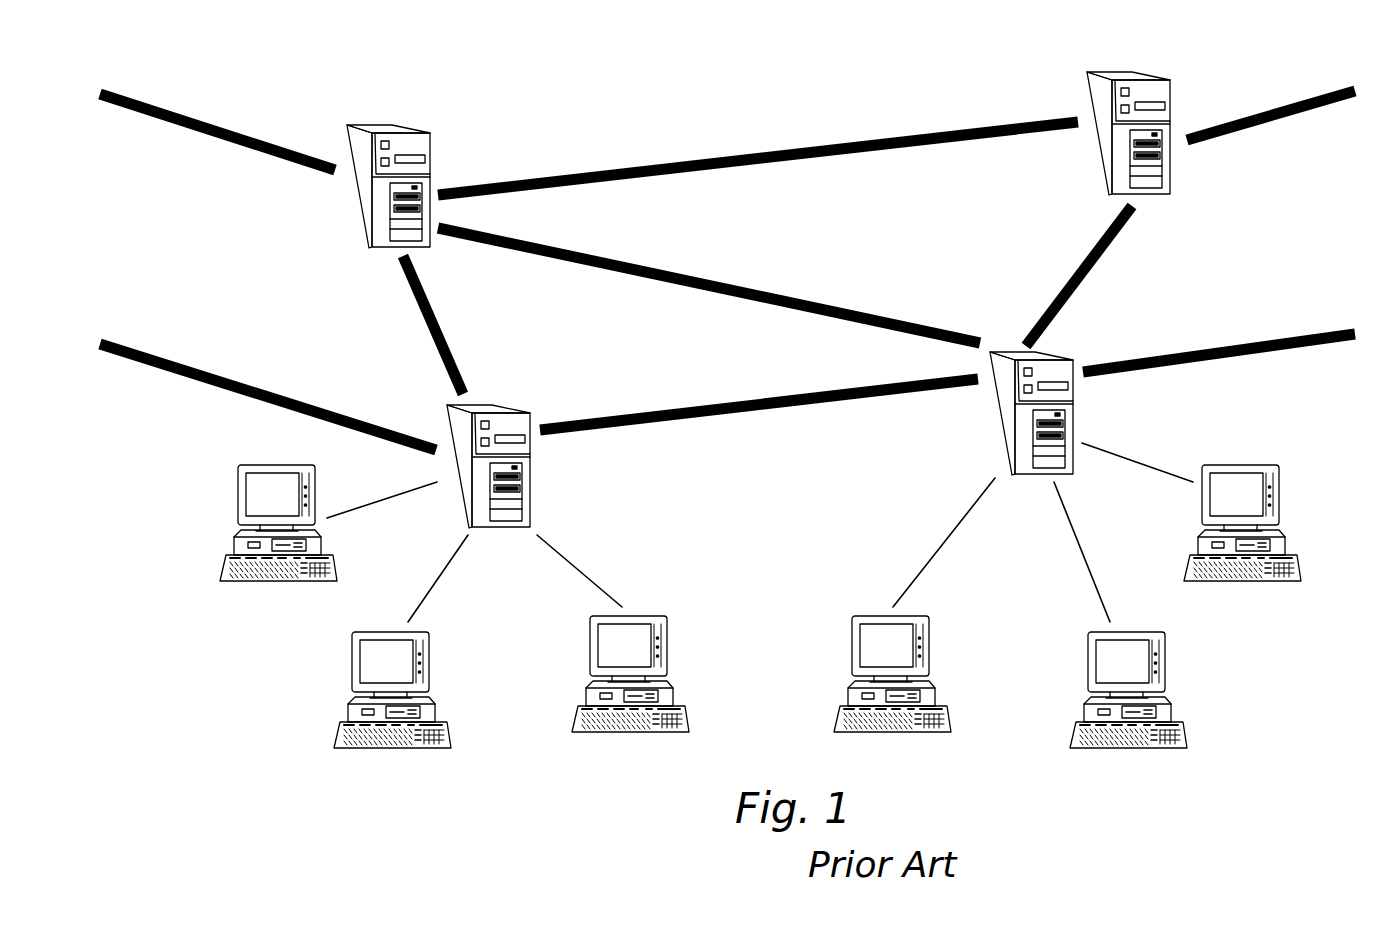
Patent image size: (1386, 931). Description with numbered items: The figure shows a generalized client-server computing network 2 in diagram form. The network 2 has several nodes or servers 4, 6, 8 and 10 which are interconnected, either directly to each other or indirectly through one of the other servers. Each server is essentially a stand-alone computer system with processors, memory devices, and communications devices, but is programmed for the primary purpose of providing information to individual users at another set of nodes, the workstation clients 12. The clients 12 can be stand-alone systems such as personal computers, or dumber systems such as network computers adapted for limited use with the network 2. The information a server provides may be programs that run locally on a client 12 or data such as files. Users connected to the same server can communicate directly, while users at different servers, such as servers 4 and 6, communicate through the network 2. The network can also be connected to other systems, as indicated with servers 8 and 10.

The client-server computing network 2 is at (258, 740).
The server 4 is at (530, 477).
The server 6 is at (1000, 413).
The server 8 is at (358, 189).
The server 10 is at (1108, 72).
The workstation client 12 is at (405, 750).